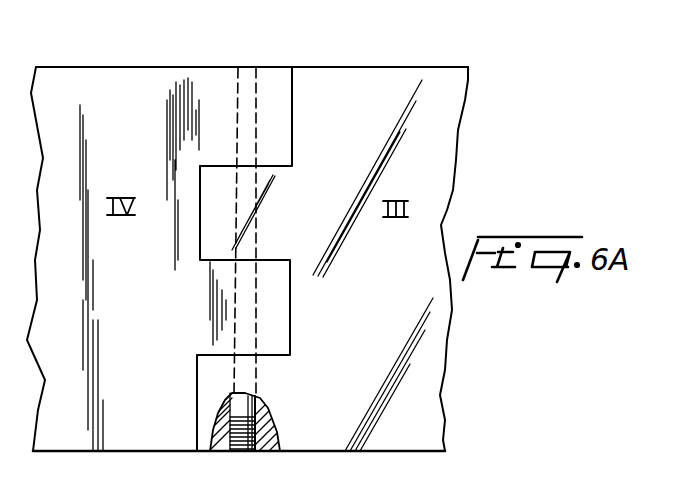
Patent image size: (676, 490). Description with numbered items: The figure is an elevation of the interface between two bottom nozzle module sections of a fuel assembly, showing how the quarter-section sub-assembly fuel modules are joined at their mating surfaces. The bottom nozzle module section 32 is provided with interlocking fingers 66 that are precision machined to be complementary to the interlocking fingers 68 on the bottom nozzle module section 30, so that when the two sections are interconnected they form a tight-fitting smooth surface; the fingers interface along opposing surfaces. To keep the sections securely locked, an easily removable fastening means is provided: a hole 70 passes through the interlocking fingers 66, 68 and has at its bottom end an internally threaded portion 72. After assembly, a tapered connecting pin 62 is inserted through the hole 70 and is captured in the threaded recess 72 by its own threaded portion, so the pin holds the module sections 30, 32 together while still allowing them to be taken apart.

The bottom nozzle module section 30 is at (410, 77).
The bottom nozzle module section 32 is at (123, 72).
The tapered connecting pin 62 is at (232, 249).
The interlocking fingers 66 is at (282, 106).
The interlocking fingers 68 is at (205, 256).
The hole 70 is at (242, 452).
The internally threaded portion 72 is at (262, 404).